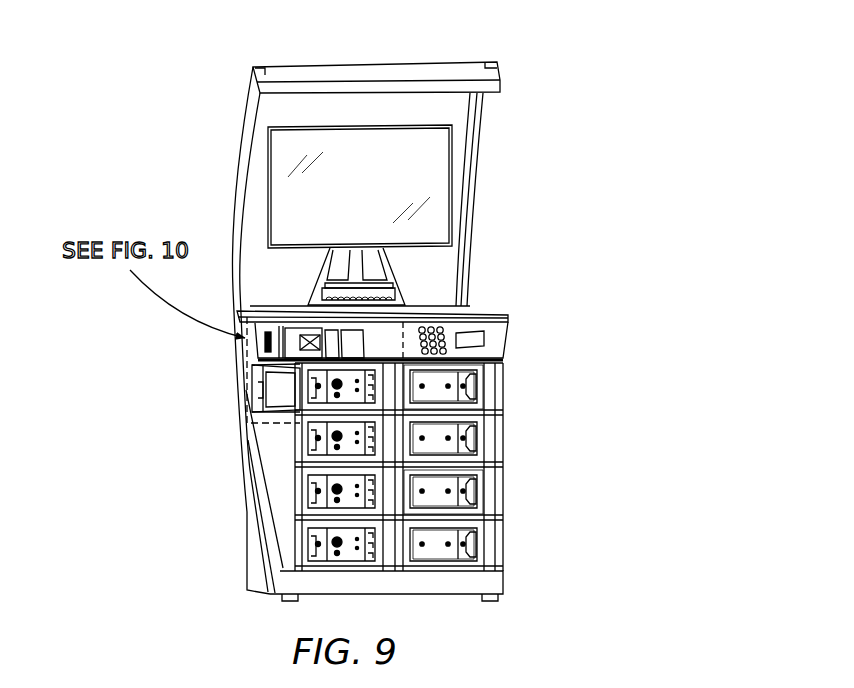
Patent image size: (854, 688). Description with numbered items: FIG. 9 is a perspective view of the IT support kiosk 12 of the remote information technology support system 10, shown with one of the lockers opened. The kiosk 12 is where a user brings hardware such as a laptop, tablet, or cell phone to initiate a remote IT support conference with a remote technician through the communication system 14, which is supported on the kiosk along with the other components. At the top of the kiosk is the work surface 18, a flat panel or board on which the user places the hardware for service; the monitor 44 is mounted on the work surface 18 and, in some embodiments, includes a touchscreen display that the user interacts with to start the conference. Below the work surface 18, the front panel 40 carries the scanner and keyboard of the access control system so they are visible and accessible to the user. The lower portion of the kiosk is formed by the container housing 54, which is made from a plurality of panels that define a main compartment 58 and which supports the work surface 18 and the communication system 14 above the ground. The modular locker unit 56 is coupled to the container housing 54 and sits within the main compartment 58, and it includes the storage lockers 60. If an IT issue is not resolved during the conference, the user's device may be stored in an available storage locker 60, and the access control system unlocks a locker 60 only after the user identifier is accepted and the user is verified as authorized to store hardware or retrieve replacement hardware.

The remote information technology (IT) support system 10 is at (582, 90).
The IT support kiosk 12 is at (518, 198).
The communication system 14 is at (353, 107).
The work surface 18 is at (485, 308).
The front panel 40 is at (510, 338).
The monitor 44 is at (268, 183).
The container housing 54 is at (446, 467).
The modular locker unit 56 is at (498, 393).
The main compartment 58 is at (498, 505).
The storage locker 60 is at (247, 393).